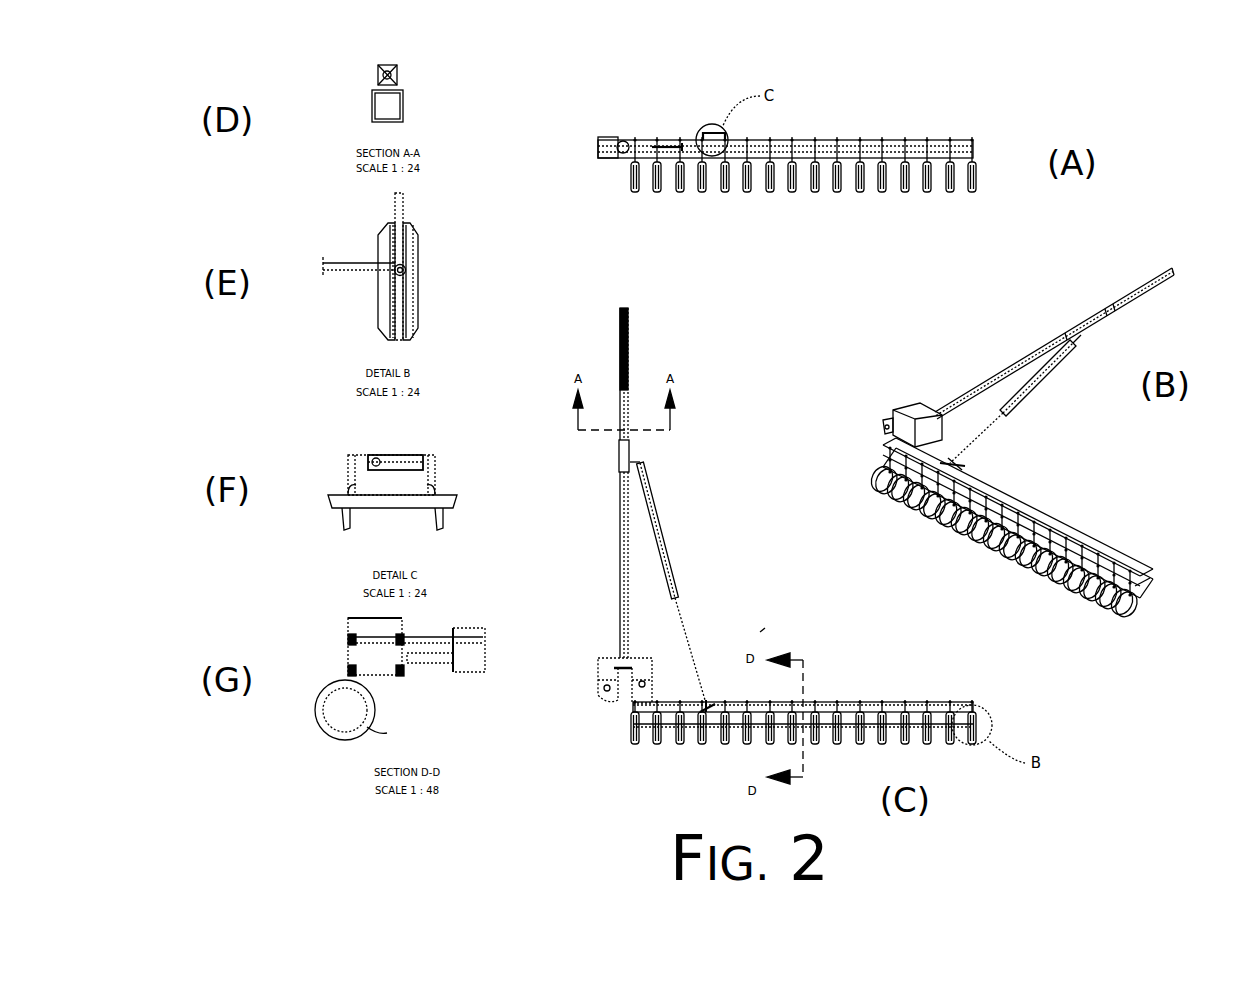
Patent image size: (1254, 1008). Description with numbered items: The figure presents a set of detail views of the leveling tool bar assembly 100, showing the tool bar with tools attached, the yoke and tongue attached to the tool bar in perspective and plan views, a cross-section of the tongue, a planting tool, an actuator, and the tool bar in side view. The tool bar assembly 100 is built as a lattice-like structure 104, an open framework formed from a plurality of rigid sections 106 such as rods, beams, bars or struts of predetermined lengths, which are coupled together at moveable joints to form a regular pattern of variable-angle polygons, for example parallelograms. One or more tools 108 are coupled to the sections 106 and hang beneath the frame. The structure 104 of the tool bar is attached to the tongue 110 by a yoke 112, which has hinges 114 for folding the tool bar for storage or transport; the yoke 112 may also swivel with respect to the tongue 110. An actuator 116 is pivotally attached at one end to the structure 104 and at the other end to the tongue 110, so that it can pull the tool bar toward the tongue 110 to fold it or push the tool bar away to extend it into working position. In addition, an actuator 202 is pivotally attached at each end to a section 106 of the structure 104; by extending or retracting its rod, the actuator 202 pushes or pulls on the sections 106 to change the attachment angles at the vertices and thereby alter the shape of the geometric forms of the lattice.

The leveling tool bar assembly 100 is at (768, 630).
The lattice-like structure 104 is at (812, 138).
The rigid sections 106 is at (1130, 592).
The tools 108 is at (860, 196).
The tongue 110 is at (1020, 357).
The yoke 112 is at (892, 410).
The hinges 114 is at (605, 693).
The actuators 116 is at (1030, 410).
The actuators 202 is at (714, 116).